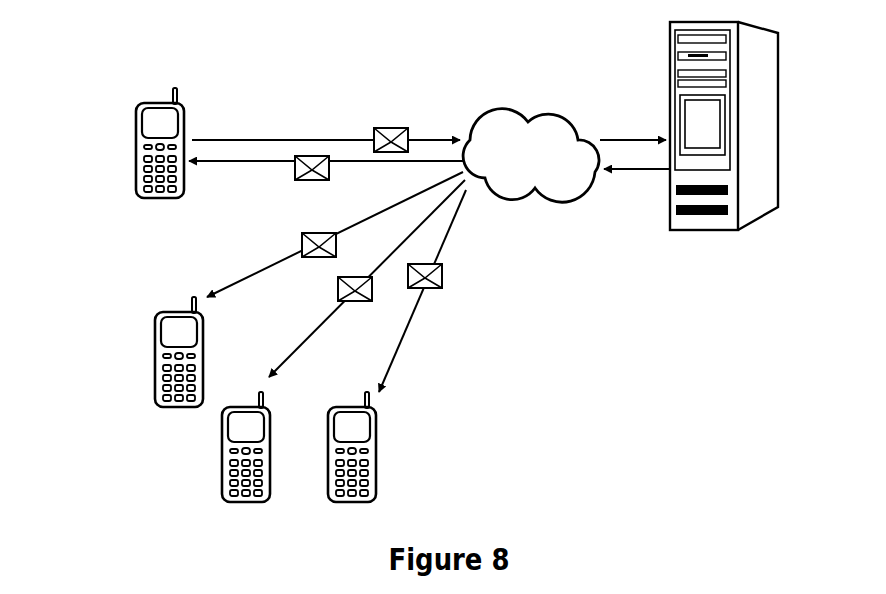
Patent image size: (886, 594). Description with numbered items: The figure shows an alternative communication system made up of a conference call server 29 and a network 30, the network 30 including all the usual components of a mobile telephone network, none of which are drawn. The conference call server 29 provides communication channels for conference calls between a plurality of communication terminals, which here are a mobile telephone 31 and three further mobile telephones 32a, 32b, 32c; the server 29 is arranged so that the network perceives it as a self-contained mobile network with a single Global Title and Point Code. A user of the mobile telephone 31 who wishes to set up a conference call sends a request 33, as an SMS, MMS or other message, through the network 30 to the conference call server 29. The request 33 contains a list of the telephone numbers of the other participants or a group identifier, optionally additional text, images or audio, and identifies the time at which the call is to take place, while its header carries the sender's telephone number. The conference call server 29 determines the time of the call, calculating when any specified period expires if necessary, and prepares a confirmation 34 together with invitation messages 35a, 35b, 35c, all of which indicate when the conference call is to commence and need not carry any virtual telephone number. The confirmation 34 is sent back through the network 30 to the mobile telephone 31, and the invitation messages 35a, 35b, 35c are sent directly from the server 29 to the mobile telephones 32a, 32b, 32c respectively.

The conference call server 29 is at (762, 230).
The network 30 is at (545, 204).
The mobile telephone 31 is at (127, 157).
The mobile telephone 32a is at (153, 370).
The mobile telephone 32b is at (220, 486).
The mobile telephone 32c is at (382, 484).
The request 33 is at (326, 126).
The confirmation 34 is at (326, 176).
The invitation message 35a is at (335, 234).
The invitation message 35b is at (367, 278).
The invitation message 35c is at (425, 291).